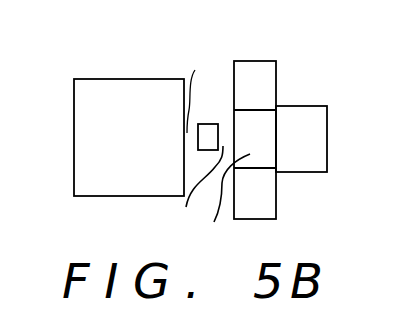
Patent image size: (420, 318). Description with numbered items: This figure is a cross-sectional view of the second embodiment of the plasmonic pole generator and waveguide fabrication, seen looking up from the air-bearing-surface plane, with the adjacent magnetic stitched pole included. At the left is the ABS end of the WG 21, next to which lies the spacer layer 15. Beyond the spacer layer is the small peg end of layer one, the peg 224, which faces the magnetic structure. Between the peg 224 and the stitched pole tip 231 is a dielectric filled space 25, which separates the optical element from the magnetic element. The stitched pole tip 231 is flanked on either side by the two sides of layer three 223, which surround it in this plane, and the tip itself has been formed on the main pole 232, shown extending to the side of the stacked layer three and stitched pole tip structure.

The WG 21 is at (132, 93).
The spacer layer 15 is at (192, 90).
The peg end of layer 1 224 is at (205, 127).
The layer 3 223 is at (261, 70).
The main pole 232 is at (299, 116).
The dielectric filled space 25 is at (198, 187).
The stitched pole tip 231 is at (226, 200).